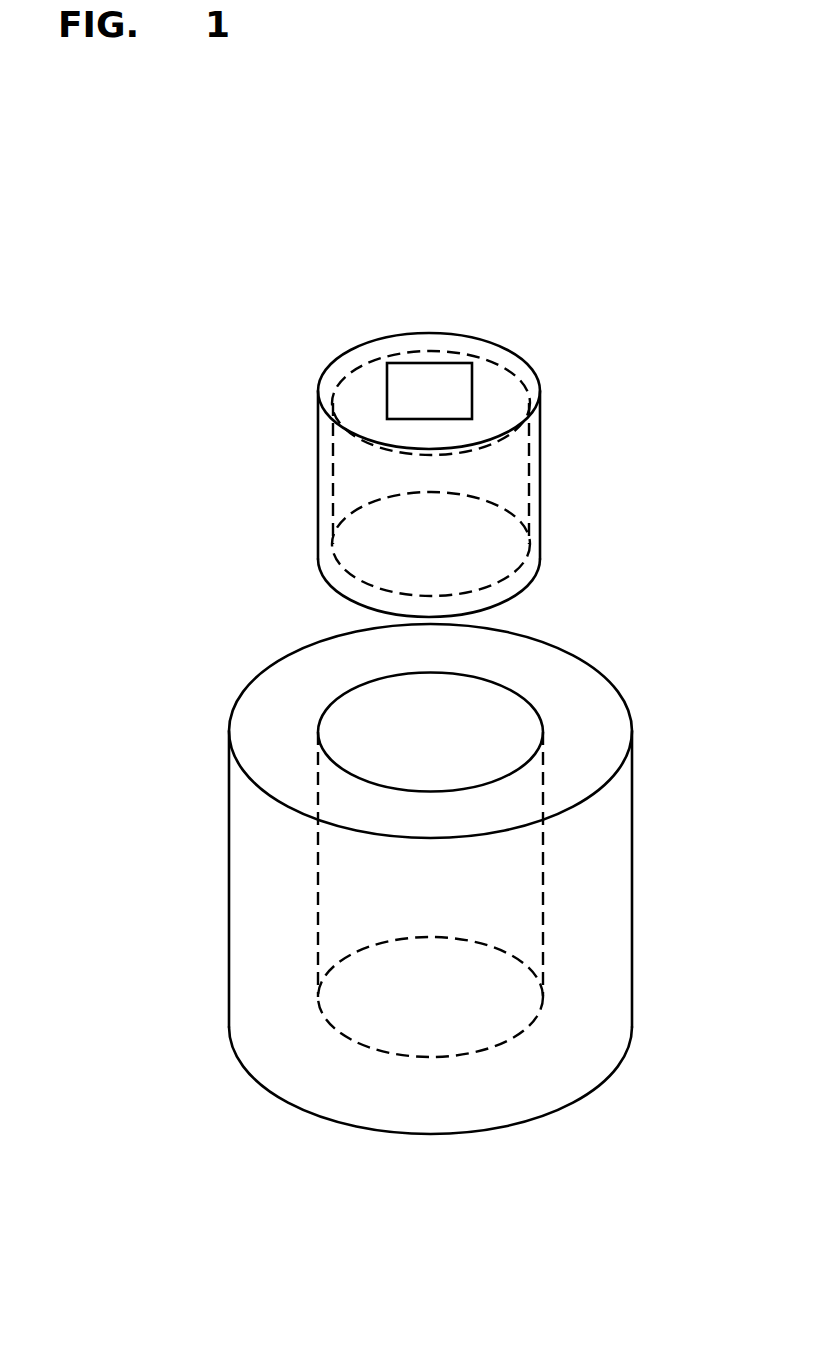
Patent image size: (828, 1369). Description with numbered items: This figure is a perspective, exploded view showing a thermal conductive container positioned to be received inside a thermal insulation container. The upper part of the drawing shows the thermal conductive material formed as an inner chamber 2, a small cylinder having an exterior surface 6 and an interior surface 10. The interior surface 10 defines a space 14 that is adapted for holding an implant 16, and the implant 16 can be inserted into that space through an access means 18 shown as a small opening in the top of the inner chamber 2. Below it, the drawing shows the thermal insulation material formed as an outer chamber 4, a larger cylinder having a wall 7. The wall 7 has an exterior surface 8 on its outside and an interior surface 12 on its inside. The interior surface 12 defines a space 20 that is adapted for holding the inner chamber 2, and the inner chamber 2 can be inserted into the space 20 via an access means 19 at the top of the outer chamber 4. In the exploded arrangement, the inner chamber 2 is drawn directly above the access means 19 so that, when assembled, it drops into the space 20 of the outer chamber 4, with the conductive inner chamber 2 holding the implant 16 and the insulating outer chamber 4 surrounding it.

The inner chamber 2 is at (262, 415).
The outer chamber 4 is at (213, 977).
The exterior surface 6 is at (318, 526).
The wall 7 is at (585, 967).
The exterior surface 8 is at (228, 880).
The interior surface 10 is at (333, 502).
The interior surface 12 is at (320, 900).
The space 14 is at (467, 513).
The implant 16 is at (467, 465).
The access means 18 is at (435, 387).
The access means 19 is at (503, 720).
The space 20 is at (428, 977).